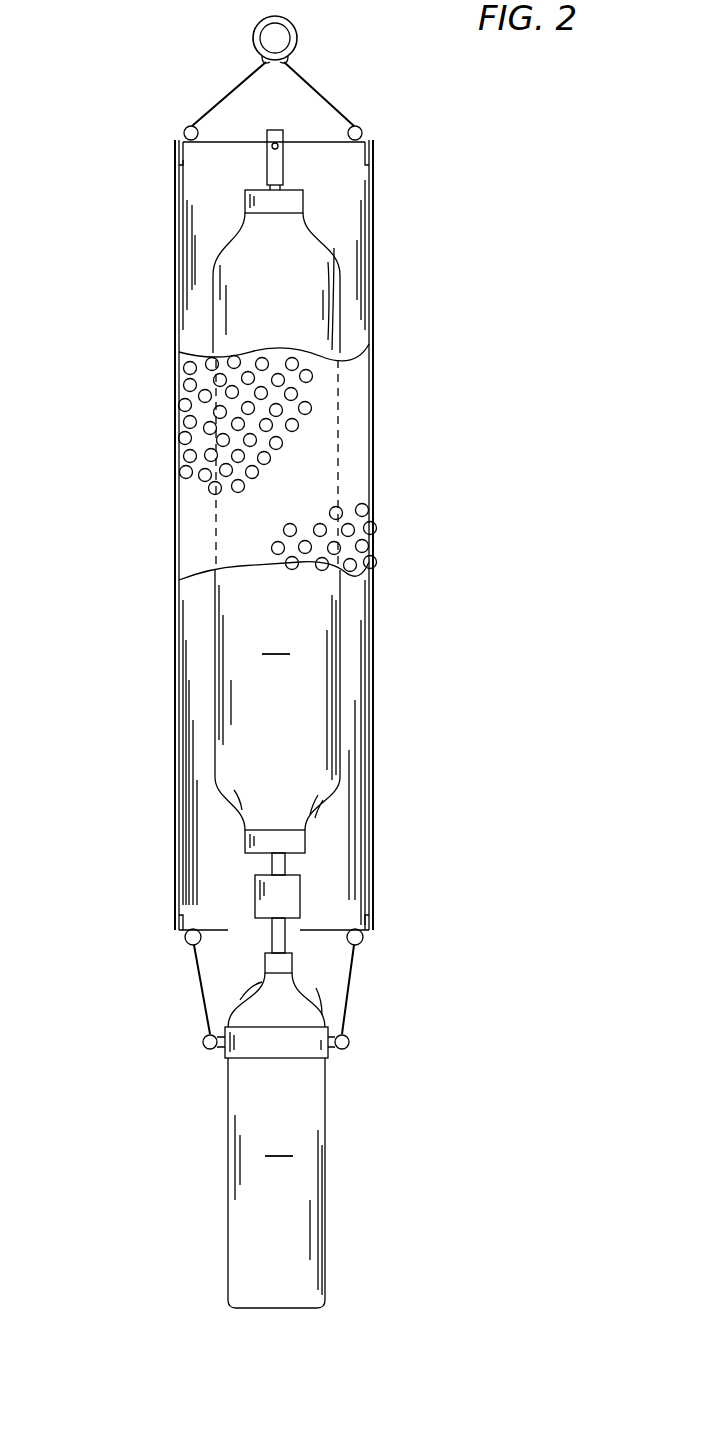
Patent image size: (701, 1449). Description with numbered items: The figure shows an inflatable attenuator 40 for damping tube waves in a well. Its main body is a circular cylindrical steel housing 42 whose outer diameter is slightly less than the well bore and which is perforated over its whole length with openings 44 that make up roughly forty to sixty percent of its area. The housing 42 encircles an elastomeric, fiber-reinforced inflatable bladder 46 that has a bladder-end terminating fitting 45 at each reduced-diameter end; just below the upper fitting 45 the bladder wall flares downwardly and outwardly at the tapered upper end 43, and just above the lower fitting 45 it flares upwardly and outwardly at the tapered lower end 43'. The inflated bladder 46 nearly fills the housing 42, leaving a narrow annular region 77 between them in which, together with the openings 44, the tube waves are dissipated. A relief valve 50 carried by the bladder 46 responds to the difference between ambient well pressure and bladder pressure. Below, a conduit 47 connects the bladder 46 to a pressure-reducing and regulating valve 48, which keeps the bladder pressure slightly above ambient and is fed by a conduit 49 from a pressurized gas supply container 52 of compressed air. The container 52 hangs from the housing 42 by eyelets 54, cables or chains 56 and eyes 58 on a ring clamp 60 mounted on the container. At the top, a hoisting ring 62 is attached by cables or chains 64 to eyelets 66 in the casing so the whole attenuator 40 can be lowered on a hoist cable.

The inflatable attenuator 40 is at (466, 444).
The cylindrical housing 42 is at (370, 376).
The tapered upper end 43 is at (324, 287).
The tapered lower end 43' is at (355, 796).
The openings 44 is at (177, 275).
The bladder-end terminating fittings 45 is at (303, 203).
The inflatable bladder 46 is at (277, 675).
The conduit 47 is at (272, 862).
The pressure-reducing and regulating valve 48 is at (300, 893).
The conduit 49 is at (272, 937).
The relief valve 50 is at (285, 152).
The pressurized gas supply container 52 is at (276, 1130).
The eyelets 54 is at (185, 940).
The cables or chains 56 is at (200, 990).
The eyes 58 is at (203, 1045).
The ring clamp 60 is at (275, 1048).
The hoisting ring 62 is at (293, 25).
The cables or chains 64 is at (243, 76).
The eyelets 66 is at (186, 126).
The narrow annular region 77 is at (355, 617).